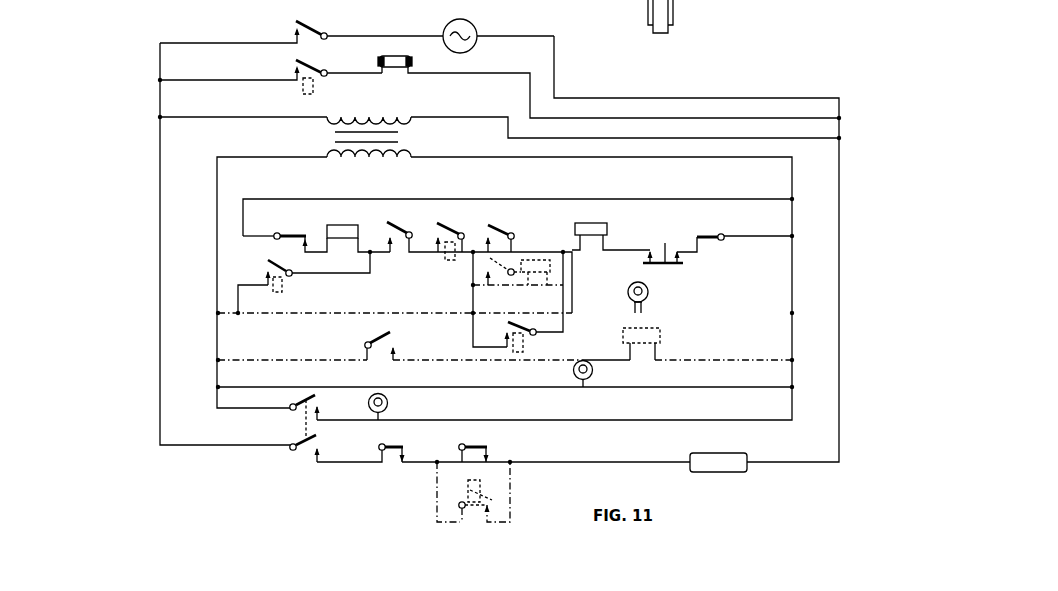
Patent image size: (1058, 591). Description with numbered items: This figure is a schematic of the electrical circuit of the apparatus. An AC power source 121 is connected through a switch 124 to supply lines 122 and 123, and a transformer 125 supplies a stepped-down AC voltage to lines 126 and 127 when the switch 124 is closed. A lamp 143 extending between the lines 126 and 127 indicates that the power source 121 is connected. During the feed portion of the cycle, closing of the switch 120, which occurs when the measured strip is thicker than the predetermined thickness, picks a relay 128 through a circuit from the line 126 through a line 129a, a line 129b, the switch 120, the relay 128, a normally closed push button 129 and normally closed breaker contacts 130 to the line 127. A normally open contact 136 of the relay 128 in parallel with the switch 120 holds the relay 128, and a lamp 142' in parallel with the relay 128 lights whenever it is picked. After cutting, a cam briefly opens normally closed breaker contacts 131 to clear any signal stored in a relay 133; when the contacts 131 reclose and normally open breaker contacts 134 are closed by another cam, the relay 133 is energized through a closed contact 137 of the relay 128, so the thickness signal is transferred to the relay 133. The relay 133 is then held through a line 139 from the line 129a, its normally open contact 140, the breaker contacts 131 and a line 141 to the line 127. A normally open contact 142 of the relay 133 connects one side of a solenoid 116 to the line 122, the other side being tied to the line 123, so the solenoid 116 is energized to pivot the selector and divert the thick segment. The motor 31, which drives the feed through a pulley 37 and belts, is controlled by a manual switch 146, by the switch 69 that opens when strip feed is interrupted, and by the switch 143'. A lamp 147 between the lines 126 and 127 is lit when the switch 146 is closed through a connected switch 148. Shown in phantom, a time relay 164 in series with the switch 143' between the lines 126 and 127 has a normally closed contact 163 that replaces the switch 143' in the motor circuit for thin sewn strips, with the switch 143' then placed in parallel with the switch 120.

The motor 31 is at (712, 453).
The pulley 37 is at (676, 8).
The switch 69 is at (390, 443).
The solenoid 116 is at (386, 55).
The switch 120 is at (498, 230).
The AC power source 121 is at (465, 22).
The supply line 122 is at (160, 97).
The supply line 123 is at (842, 130).
The switch 124 is at (308, 23).
The transformer 125 is at (404, 139).
The line 126 is at (217, 180).
The line 127 is at (792, 186).
The relay 128 is at (588, 224).
The push button 129 is at (672, 266).
The line 129a is at (269, 316).
The line 129b is at (472, 290).
The breaker contacts 130 is at (705, 238).
The breaker contacts 131 is at (294, 230).
The relay 133 is at (338, 223).
The breaker contacts 134 is at (383, 225).
The contact 136 is at (508, 325).
The contact 137 is at (440, 228).
The line 139 is at (264, 282).
The contact 140 is at (270, 262).
The line 141 is at (560, 199).
The contact 142 is at (271, 63).
The lamp 142' is at (617, 291).
The lamp 143 is at (504, 374).
The switch 143' is at (399, 360).
The manual switch 146 is at (294, 440).
The lamp 147 is at (389, 406).
The switch 148 is at (317, 407).
The normally closed contact 163 is at (495, 497).
The time relay 164 is at (526, 286).